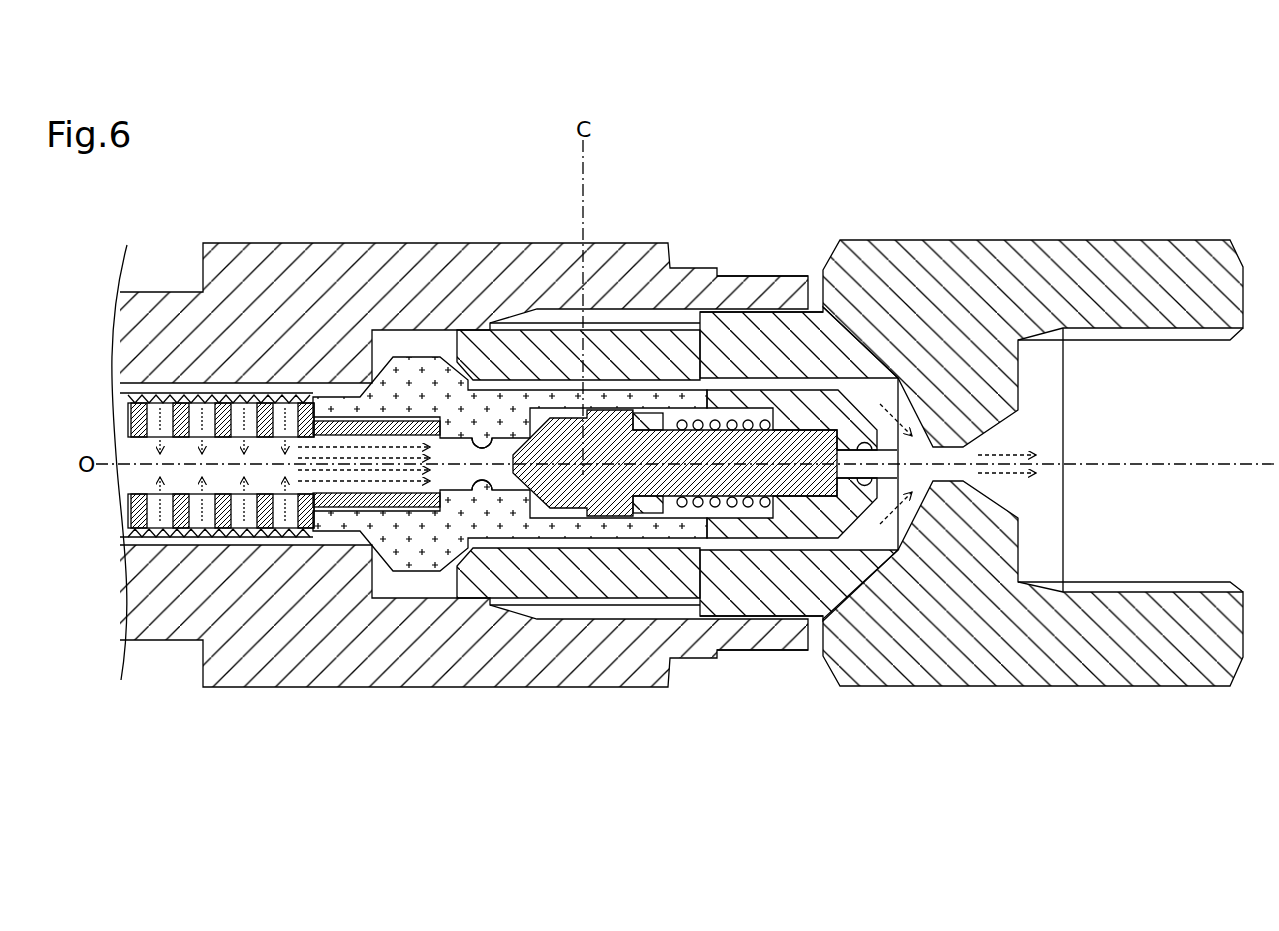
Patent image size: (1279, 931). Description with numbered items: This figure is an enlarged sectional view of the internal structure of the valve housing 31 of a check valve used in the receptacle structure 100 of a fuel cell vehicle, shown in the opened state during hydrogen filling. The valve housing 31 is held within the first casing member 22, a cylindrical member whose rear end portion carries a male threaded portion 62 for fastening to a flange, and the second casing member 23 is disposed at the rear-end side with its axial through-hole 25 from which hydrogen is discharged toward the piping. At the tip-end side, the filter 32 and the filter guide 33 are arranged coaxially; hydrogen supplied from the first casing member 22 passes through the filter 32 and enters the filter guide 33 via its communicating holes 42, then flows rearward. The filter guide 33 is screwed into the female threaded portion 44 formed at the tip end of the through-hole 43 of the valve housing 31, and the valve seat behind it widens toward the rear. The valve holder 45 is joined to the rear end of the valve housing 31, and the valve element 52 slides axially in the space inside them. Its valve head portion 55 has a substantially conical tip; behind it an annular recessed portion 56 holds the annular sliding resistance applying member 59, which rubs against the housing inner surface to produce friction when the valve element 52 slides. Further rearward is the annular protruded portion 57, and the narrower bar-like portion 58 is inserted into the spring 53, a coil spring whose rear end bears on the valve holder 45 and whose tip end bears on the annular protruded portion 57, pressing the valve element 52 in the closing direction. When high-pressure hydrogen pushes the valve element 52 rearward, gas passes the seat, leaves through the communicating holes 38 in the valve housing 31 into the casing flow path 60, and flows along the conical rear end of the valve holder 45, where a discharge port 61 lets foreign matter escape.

The receptacle structure 100 is at (1209, 130).
The first casing member 22 is at (506, 689).
The second casing member 23 is at (1140, 668).
The through-hole 25 is at (1157, 330).
The valve housing 31 is at (478, 575).
The filter 32 is at (195, 392).
The filter guide 33 is at (333, 537).
The communicating holes 38 is at (563, 345).
The communicating holes 42 is at (247, 403).
The through-hole 43 is at (490, 425).
The female threaded portion 44 is at (402, 372).
The valve holder 45 is at (806, 365).
The valve element 52 is at (700, 418).
The spring 53 is at (760, 400).
The valve head portion 55 is at (608, 430).
The annular recessed portion 56 is at (653, 497).
The annular protruded portion 57 is at (732, 652).
The bar-like portion 58 is at (903, 552).
The sliding resistance applying member 59 is at (658, 520).
The casing flow path 60 is at (775, 612).
The discharge port 61 is at (862, 448).
The male threaded portion 62 is at (720, 652).